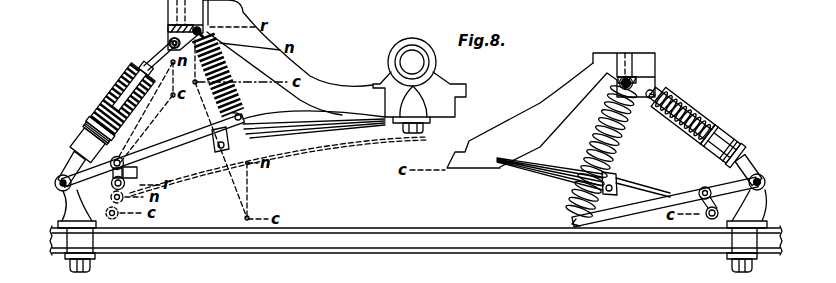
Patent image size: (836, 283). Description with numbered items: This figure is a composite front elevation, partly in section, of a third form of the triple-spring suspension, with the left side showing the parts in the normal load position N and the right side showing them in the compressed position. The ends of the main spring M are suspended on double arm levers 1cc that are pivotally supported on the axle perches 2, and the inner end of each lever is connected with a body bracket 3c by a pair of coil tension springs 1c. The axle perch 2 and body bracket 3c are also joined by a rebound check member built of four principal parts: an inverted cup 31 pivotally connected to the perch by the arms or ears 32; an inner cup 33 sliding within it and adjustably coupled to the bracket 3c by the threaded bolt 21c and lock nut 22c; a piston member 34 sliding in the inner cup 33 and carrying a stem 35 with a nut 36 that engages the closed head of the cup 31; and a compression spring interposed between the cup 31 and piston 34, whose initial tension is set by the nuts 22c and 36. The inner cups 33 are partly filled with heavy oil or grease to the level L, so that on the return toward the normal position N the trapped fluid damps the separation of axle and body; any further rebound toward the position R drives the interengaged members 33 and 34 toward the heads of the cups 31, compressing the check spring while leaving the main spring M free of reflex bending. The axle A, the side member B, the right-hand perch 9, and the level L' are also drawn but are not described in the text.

The axle perch 2 is at (78, 206).
The hanger bracket / bolt 9 is at (764, 189).
The inverted cup 31 is at (80, 138).
The arms or ears 32 is at (66, 172).
The inner cup 33 is at (87, 130).
The piston member 34 is at (97, 120).
The stem 35 is at (127, 80).
The nut 36 is at (146, 65).
The body bracket 3c is at (167, 25).
The threaded bolt 21c is at (166, 50).
The lock nut 22c is at (769, 152).
The coil tension spring 1c is at (243, 98).
The double arm lever 1cc is at (185, 141).
The axle A is at (416, 249).
The frame side member B is at (410, 84).
The main spring M is at (290, 125).
The normal load position N is at (427, 137).
The rebound position R is at (455, 117).
The level L is at (153, 111).
The lever L' is at (657, 149).